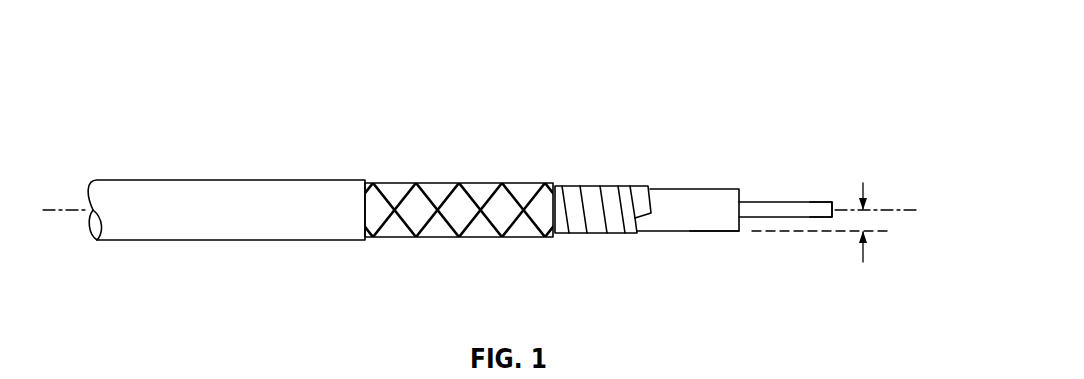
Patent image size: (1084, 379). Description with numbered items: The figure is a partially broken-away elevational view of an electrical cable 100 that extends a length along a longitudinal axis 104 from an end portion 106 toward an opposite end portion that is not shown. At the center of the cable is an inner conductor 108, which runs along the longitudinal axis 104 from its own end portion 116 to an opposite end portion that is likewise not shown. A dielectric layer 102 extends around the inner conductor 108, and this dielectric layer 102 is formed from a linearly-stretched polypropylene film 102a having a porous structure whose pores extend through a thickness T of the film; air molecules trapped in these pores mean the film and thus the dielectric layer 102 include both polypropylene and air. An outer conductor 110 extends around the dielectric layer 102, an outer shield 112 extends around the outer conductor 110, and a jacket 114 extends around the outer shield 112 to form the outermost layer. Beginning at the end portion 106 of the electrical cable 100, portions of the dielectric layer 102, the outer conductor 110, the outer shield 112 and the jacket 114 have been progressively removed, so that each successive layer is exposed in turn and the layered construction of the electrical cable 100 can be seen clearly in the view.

The electrical cable 100 is at (757, 29).
The dielectric layer 102 is at (692, 188).
The linearly-stretched polypropylene film 102a is at (711, 220).
The longitudinal axis 104 is at (921, 210).
The end portion 106 is at (801, 298).
The inner conductor 108 is at (785, 200).
The outer conductor 110 is at (612, 185).
The outer shield 112 is at (486, 181).
The jacket 114 is at (284, 179).
The end portion 116 is at (817, 177).
The thickness T is at (863, 255).